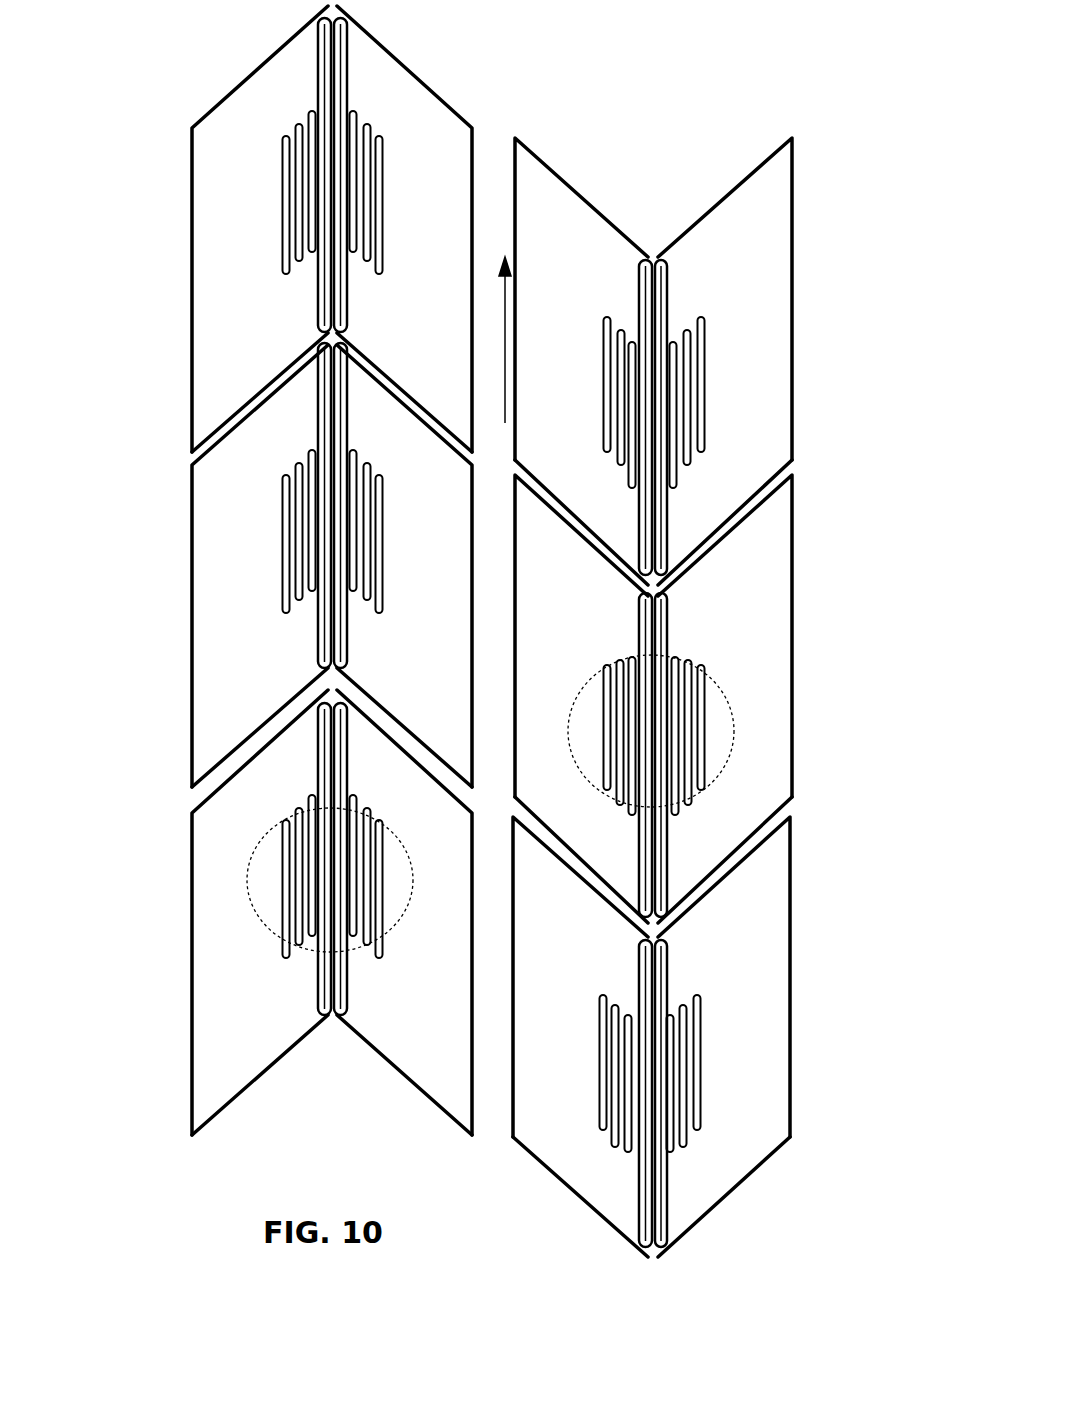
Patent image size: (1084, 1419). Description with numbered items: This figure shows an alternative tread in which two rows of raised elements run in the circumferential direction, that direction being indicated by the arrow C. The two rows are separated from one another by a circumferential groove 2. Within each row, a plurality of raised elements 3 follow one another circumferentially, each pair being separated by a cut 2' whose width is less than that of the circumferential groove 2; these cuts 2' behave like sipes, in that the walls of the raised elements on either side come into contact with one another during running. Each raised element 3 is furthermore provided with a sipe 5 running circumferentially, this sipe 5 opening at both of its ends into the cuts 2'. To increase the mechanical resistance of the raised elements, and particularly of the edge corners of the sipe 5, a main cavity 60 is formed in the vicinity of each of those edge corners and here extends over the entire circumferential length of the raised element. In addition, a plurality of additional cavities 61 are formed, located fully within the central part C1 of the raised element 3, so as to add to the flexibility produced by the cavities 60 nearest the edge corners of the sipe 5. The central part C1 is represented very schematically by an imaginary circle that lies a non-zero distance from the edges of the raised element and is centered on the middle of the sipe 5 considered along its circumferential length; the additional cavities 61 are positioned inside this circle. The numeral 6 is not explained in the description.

The circumferential groove 2 is at (497, 631).
The cut 2' is at (493, 795).
The raised element 3 is at (228, 627).
The sipe 5 is at (663, 645).
The connecting strip 6 is at (663, 820).
The main cavity 60 is at (667, 608).
The additional cavities 61 is at (678, 753).
The circumferential direction C is at (495, 340).
The central part C1 is at (247, 882).